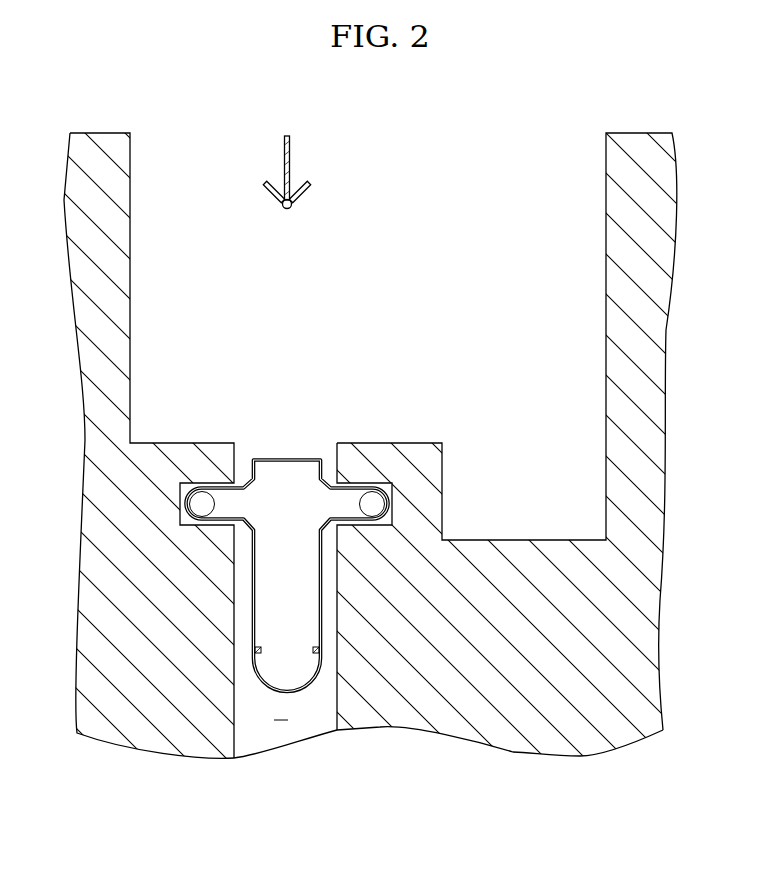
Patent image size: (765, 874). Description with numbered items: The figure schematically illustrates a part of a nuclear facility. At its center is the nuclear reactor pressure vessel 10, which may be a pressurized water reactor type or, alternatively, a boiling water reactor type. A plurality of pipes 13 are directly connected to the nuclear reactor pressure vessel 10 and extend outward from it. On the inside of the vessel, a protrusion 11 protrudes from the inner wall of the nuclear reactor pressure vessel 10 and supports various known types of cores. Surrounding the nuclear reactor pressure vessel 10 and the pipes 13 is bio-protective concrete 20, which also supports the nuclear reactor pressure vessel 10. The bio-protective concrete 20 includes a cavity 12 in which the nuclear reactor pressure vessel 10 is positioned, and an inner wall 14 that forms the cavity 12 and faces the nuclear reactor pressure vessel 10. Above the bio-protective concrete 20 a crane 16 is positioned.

The nuclear reactor pressure vessel 10 is at (340, 627).
The protrusion 11 is at (262, 650).
The cavity 12 is at (277, 722).
The pipes 13 is at (200, 502).
The inner wall 14 is at (253, 623).
The crane 16 is at (290, 153).
The bio-protective concrete 20 is at (502, 690).